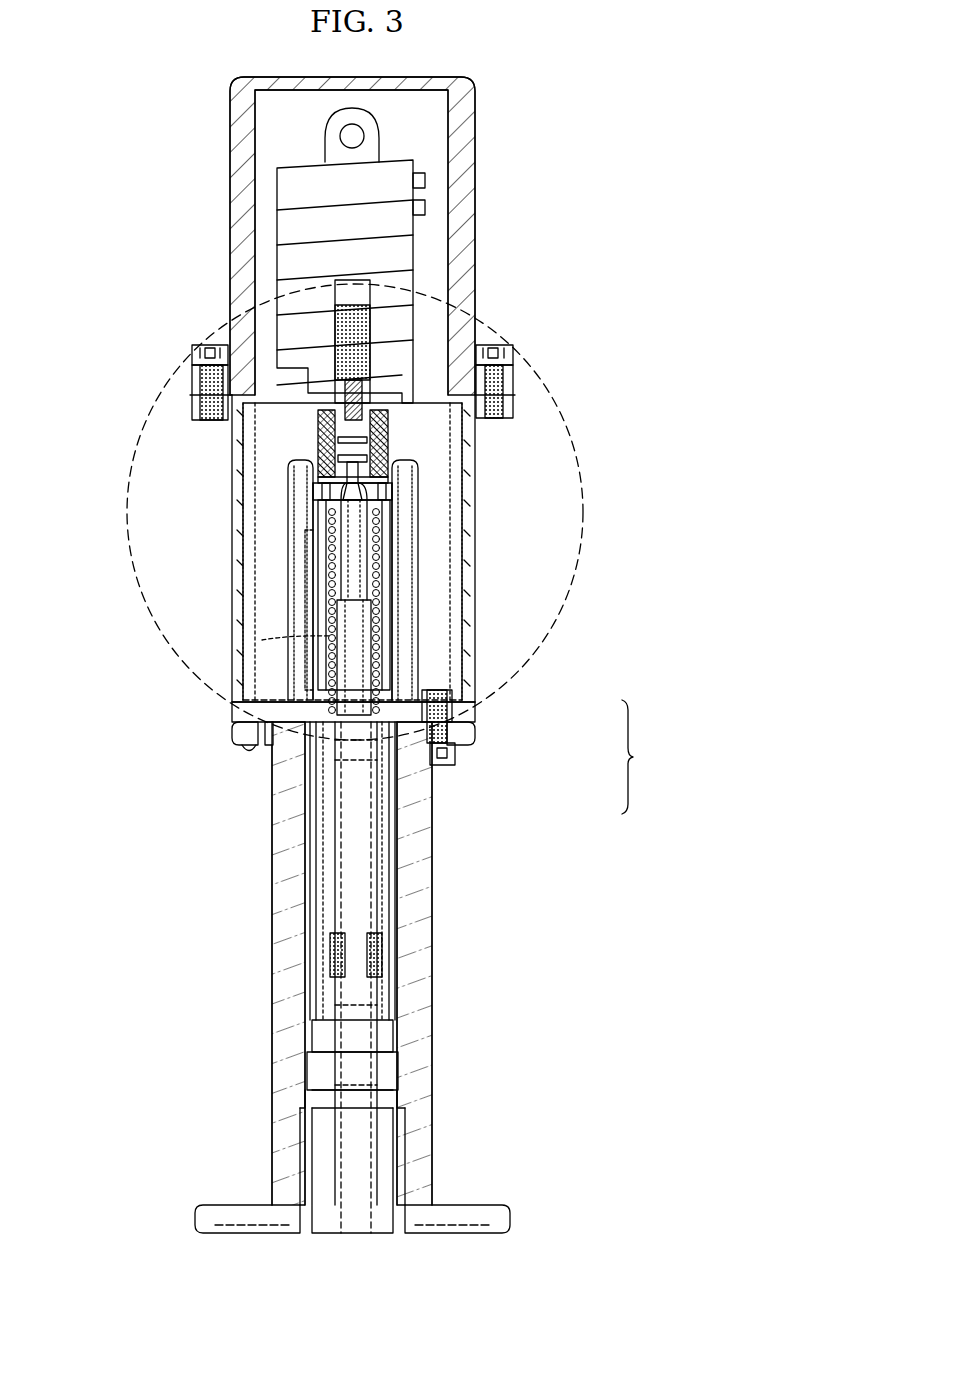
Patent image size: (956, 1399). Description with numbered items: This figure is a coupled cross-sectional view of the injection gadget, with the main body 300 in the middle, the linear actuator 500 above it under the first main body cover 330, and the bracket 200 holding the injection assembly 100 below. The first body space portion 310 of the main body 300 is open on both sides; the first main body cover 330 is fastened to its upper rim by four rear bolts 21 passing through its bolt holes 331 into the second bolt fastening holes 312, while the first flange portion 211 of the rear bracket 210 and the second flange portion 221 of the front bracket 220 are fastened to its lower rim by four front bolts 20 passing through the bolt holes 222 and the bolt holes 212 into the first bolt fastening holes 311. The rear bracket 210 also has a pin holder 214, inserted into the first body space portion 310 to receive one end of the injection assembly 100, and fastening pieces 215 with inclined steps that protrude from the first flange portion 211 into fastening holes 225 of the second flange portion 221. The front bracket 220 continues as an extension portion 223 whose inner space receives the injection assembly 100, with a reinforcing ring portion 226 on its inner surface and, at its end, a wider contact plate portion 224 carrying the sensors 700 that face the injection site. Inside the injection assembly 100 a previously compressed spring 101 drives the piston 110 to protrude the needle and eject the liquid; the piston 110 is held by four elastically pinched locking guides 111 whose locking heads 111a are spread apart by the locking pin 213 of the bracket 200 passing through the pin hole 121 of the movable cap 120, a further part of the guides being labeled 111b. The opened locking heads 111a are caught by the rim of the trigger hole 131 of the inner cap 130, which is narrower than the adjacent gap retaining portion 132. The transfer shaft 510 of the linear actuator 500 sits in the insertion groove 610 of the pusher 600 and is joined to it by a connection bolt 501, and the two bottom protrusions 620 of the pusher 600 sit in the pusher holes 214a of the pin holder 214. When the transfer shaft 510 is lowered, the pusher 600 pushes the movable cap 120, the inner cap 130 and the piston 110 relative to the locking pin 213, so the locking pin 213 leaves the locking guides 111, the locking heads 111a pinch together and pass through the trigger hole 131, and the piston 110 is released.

The first main body cover 330 is at (476, 200).
The linear actuator 500 is at (420, 263).
The connection bolt 501 is at (345, 395).
The transfer shaft 510 is at (344, 400).
The rear bolts 21 is at (515, 343).
The bolt holes 331 is at (505, 375).
The second bolt fastening holes 312 is at (510, 403).
The pusher 600 is at (400, 427).
The insertion groove 610 is at (338, 458).
The bottom protrusions 620 is at (345, 480).
The pin hole 121 is at (395, 452).
The locking pin 213 is at (392, 470).
The pusher holes 214a is at (315, 483).
The locking heads 111a is at (345, 492).
The second guide post 111b is at (362, 520).
The locking guides 111 is at (538, 481).
The gap retaining portion 132 is at (325, 510).
The trigger hole 131 is at (330, 545).
The main body 300 is at (478, 552).
The first body space portion 310 is at (273, 618).
The movable cap 120 is at (405, 575).
The inner cap 130 is at (400, 601).
The piston 110 is at (375, 625).
The pin holder 214 is at (430, 637).
The spring 101 is at (262, 640).
The first bolt fastening holes 311 is at (445, 695).
The bolt holes 212 is at (447, 705).
The first flange portion 211 is at (232, 708).
The rear bracket 210 is at (480, 712).
The bracket 200 is at (652, 757).
The second flange portion 221 is at (232, 738).
The bolt holes 222 is at (455, 738).
The fastening holes 225 is at (245, 752).
The front bolts 20 is at (455, 760).
The fastening pieces 215 is at (268, 748).
The front bracket 220 is at (440, 815).
The extension portion 223 is at (290, 960).
The injection assembly 100 is at (410, 946).
The reinforcing ring portion 226 is at (305, 1098).
The contact plate portion 224 is at (195, 1220).
The sensor 700 is at (510, 1227).